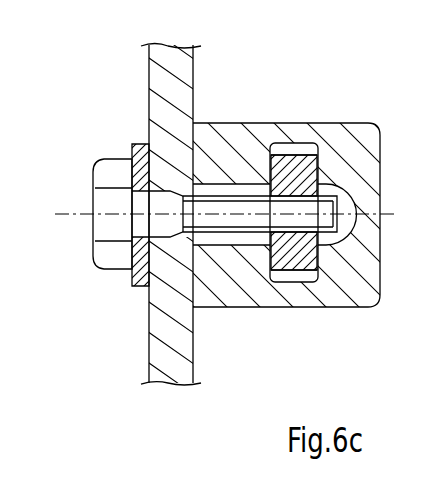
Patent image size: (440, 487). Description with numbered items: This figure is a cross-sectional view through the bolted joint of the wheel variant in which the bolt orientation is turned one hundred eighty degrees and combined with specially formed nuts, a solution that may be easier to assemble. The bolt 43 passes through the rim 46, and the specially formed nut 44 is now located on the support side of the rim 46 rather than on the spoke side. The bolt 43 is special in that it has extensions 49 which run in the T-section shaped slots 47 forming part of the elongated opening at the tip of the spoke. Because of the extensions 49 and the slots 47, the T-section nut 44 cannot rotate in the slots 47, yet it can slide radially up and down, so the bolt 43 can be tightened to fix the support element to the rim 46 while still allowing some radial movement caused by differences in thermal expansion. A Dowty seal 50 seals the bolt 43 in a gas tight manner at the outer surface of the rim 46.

The bolt 43 is at (108, 172).
The specially formed nut 44 is at (143, 213).
The rim 46 is at (158, 77).
The T-section shaped slot 47 is at (288, 273).
The extension 49 is at (293, 156).
The Dowty seal 50 is at (133, 280).